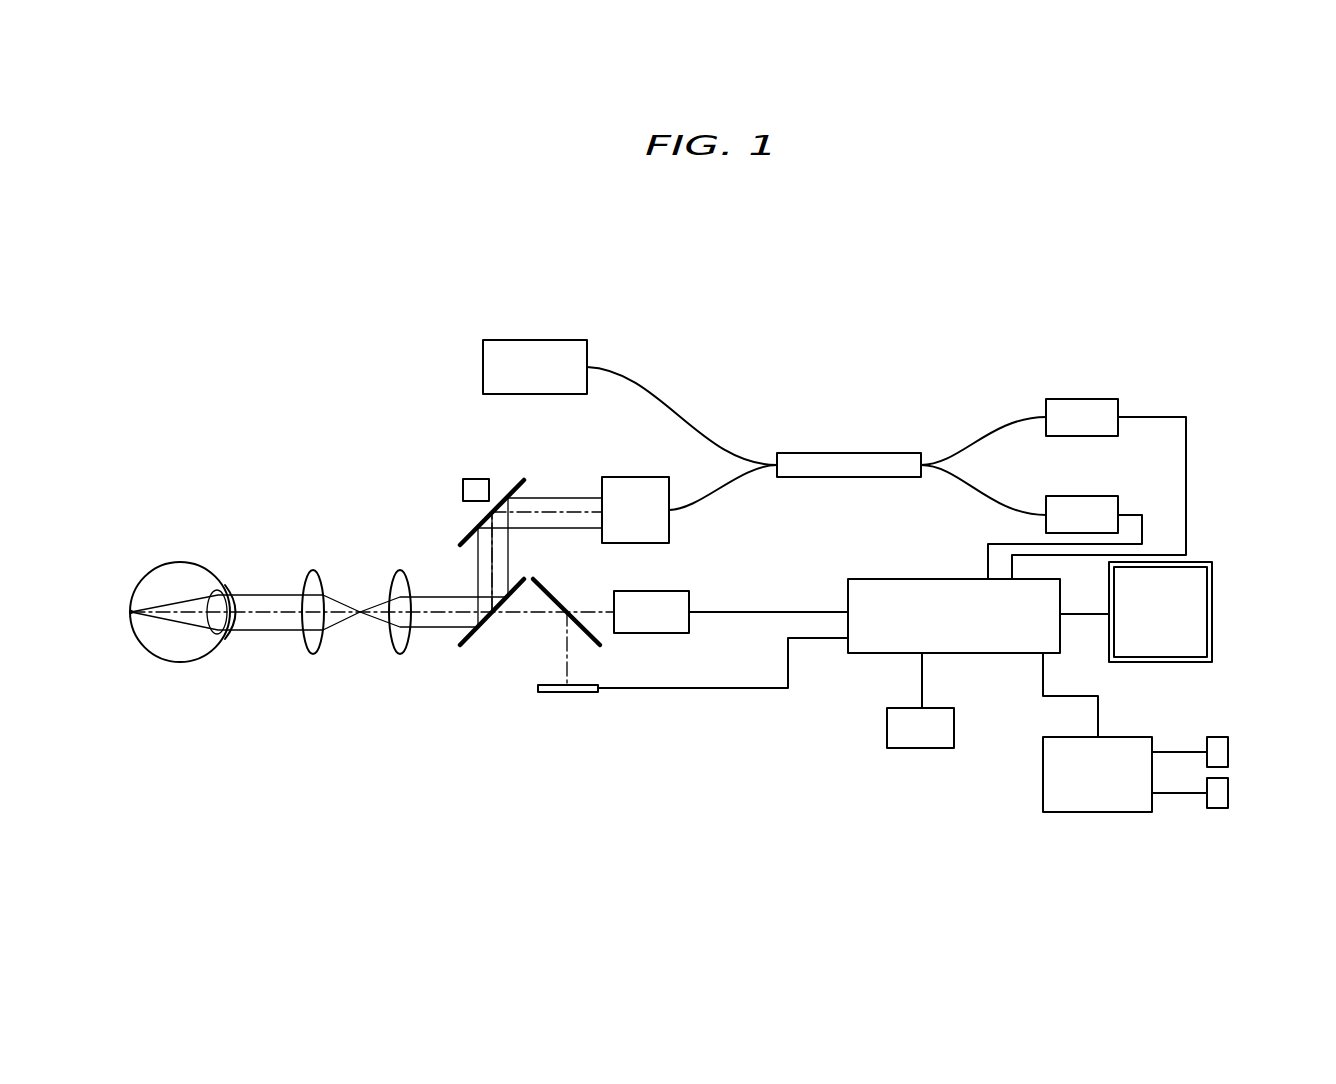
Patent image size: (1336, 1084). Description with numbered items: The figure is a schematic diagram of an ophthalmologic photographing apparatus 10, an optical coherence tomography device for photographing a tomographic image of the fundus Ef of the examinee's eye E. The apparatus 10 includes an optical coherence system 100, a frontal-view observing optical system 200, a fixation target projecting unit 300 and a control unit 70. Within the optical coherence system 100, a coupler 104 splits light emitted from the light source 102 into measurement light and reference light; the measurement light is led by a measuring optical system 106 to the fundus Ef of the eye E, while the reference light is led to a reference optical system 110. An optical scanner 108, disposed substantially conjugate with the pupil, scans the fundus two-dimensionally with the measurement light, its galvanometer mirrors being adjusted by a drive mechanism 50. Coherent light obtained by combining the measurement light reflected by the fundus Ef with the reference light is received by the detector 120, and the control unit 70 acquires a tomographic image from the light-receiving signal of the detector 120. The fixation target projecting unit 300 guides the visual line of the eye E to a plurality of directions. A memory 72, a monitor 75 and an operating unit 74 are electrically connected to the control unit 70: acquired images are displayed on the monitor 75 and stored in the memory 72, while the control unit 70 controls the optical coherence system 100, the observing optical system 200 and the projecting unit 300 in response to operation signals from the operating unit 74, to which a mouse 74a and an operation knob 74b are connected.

The ophthalmologic photographing apparatus 10 is at (812, 312).
The optical coherence system 100 is at (939, 386).
The reference optical system 110 is at (483, 352).
The coupler 104 is at (823, 467).
The detector 120 is at (1065, 403).
The light source 102 is at (1062, 513).
The optical scanner 108 is at (463, 514).
The drive mechanism 50 is at (477, 479).
The measuring optical system 106 is at (343, 530).
The examinee's eye E is at (162, 583).
The fundus Ef is at (142, 647).
The frontal-view observing optical system 200 is at (710, 591).
The fixation target projecting unit 300 is at (557, 692).
The control unit 70 is at (893, 579).
The memory 72 is at (907, 748).
The operating unit 74 is at (1098, 812).
The mouse 74a is at (1220, 752).
The operation knob 74b is at (1220, 793).
The monitor 75 is at (1165, 662).